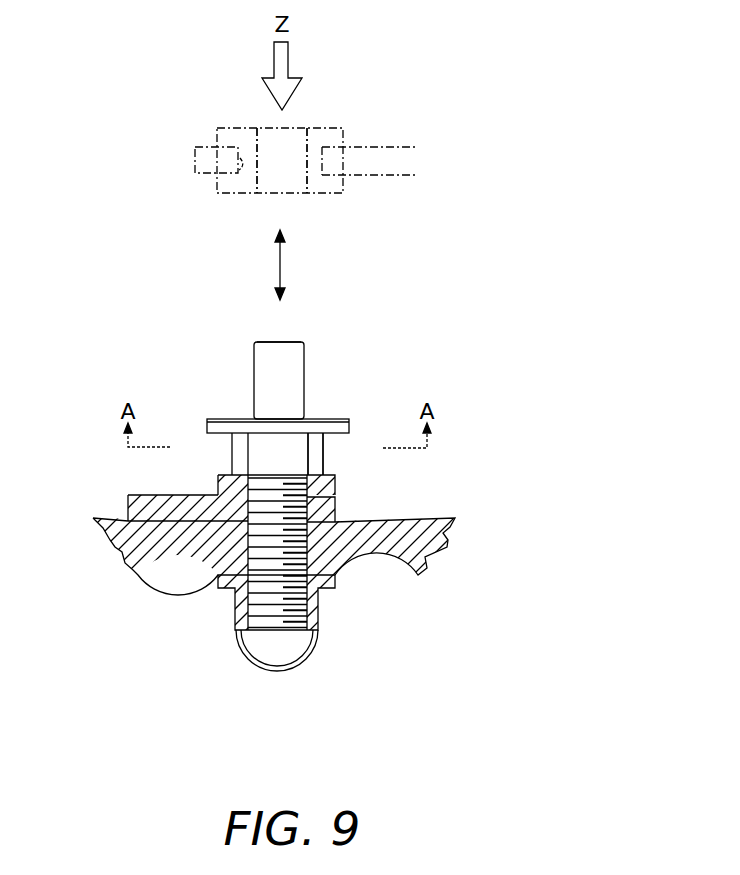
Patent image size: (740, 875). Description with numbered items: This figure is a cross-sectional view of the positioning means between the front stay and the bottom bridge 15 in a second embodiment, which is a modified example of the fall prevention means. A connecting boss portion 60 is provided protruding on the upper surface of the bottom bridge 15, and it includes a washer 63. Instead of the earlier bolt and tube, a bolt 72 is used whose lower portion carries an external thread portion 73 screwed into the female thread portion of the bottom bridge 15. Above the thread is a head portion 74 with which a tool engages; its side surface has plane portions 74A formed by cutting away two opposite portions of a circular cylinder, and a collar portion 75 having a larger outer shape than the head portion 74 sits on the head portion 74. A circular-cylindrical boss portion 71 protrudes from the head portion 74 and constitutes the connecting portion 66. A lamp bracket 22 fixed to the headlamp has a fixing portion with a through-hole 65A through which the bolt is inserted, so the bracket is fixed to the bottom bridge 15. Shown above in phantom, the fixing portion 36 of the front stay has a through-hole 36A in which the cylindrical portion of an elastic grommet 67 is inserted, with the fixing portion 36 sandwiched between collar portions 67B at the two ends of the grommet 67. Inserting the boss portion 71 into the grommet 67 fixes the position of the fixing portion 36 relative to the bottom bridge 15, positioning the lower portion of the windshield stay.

The bottom bridge 15 is at (125, 552).
The lamp bracket 22 is at (130, 493).
The fixing portion 36 is at (413, 147).
The through-hole 36A is at (197, 160).
The connecting boss portion 60 is at (370, 380).
The washer 63 is at (337, 523).
The through-hole 65A is at (237, 172).
The connecting portion 66 is at (304, 372).
The elastic grommet 67 is at (228, 128).
The collar portion 67B is at (338, 175).
The boss portion 71 is at (403, 371).
The bolt 72 is at (251, 337).
The external thread portion 73 is at (290, 636).
The head portion 74 is at (233, 472).
The plane portion 74A is at (312, 457).
The collar portion 75 is at (348, 427).